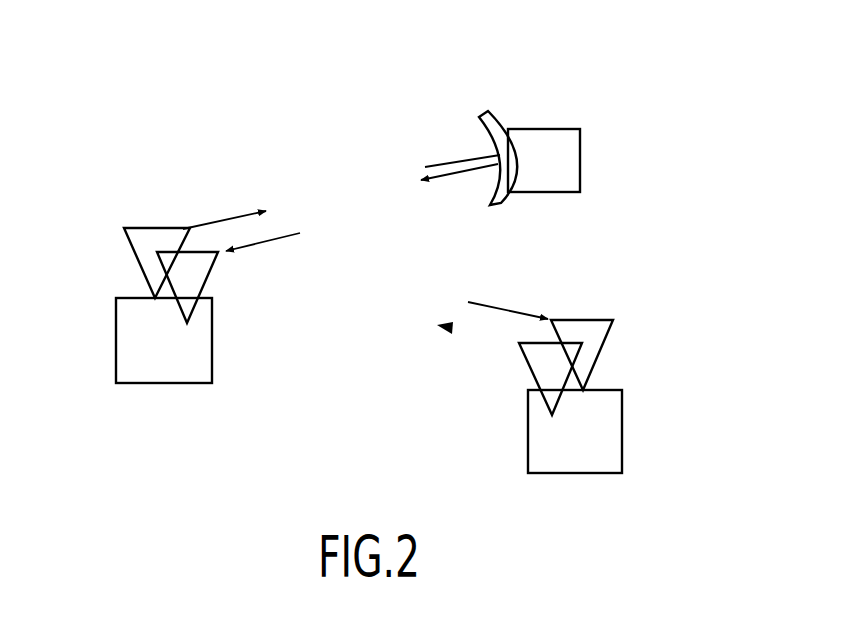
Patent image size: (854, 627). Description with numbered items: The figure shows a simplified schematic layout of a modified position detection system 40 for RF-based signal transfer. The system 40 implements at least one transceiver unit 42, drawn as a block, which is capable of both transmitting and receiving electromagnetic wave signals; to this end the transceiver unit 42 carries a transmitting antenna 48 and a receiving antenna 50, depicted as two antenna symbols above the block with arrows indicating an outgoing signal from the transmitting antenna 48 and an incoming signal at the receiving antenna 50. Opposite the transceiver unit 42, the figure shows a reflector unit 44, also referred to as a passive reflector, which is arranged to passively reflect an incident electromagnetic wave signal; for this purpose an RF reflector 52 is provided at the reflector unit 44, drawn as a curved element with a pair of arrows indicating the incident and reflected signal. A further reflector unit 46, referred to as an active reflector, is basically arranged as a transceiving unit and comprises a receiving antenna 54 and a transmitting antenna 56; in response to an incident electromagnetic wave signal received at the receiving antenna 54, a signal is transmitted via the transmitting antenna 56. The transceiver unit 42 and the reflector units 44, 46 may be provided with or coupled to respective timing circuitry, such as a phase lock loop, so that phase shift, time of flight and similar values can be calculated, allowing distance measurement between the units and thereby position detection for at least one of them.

The position detection system 40 is at (289, 427).
The transceiver unit 42 is at (116, 338).
The reflector unit 44 is at (580, 157).
The reflector unit 46 is at (622, 430).
The transmitting antenna 48 is at (132, 252).
The receiving antenna 50 is at (210, 284).
The RF reflector 52 is at (497, 118).
The receiving antenna 54 is at (606, 344).
The transmitting antenna 56 is at (530, 375).